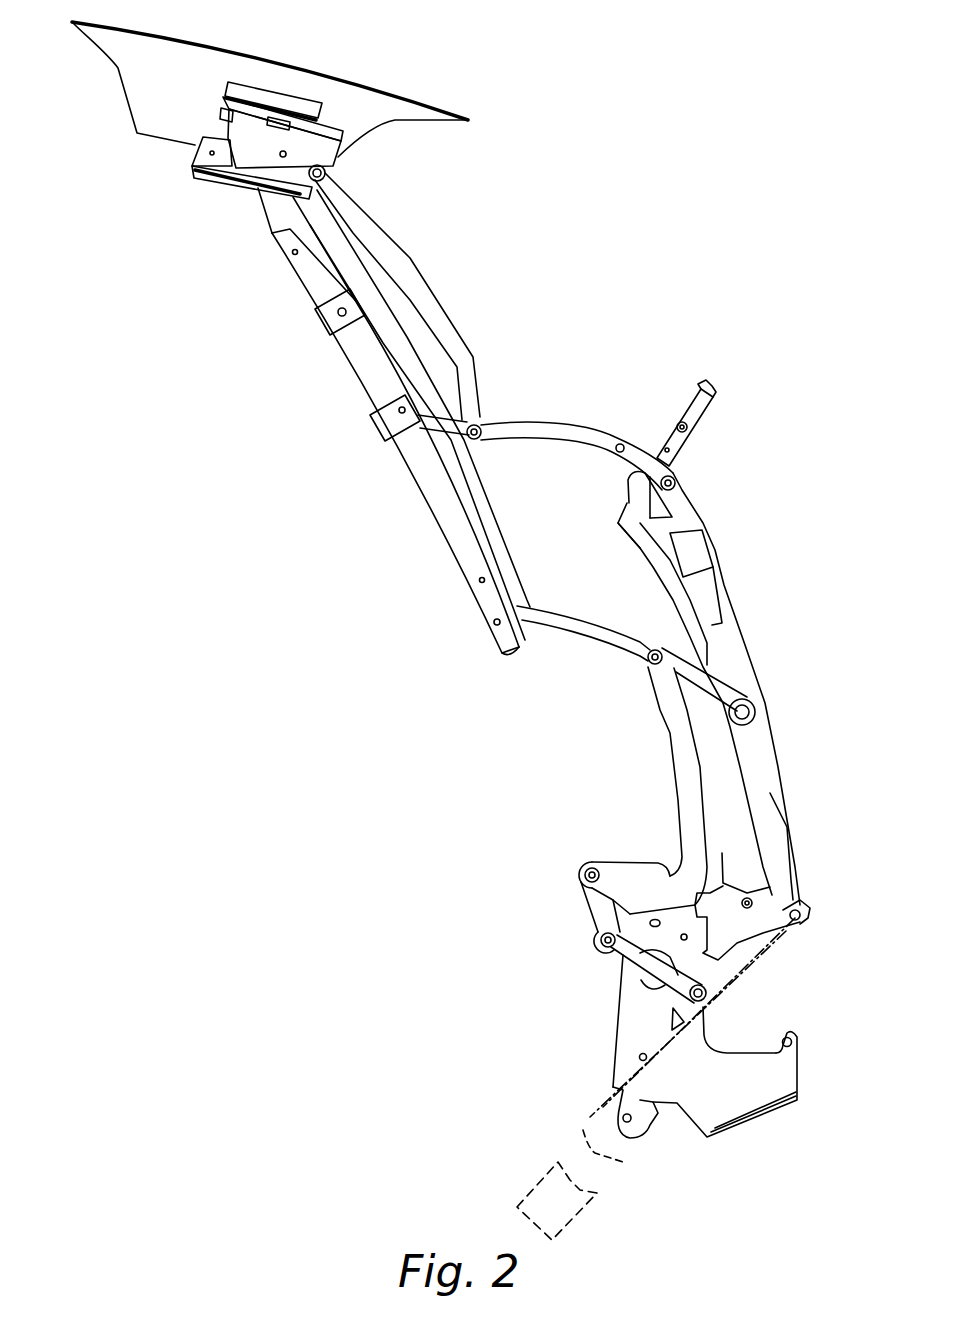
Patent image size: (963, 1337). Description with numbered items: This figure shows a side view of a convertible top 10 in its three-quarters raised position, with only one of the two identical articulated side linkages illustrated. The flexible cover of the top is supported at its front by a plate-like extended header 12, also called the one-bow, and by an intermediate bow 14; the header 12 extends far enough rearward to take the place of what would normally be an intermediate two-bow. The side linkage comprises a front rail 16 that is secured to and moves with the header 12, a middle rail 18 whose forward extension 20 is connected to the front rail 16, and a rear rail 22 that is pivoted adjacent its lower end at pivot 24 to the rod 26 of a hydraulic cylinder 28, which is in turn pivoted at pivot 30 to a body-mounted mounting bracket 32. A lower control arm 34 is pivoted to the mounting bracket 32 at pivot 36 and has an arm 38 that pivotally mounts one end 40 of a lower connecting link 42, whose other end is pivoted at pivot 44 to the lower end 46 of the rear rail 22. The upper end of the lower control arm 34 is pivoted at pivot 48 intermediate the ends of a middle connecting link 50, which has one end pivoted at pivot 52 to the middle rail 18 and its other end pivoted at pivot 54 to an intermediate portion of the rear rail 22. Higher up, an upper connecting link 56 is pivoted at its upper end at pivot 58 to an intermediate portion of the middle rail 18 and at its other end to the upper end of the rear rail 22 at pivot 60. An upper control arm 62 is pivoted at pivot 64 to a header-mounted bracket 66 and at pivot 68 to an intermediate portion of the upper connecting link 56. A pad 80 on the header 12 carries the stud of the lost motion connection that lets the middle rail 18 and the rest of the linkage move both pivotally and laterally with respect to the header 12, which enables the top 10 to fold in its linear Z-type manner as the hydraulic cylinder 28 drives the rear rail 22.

The convertible top 10 is at (668, 108).
The header 12 is at (366, 82).
The intermediate bow 14 is at (710, 397).
The front rail 16 is at (228, 182).
The middle rail 18 is at (427, 478).
The forward extension 20 is at (263, 209).
The rear rail 22 is at (678, 603).
The pivot 24 is at (805, 914).
The rod 26 is at (714, 1006).
The hydraulic cylinder 28 is at (536, 1182).
The pivot 30 is at (624, 1116).
The mounting bracket 32 is at (793, 1078).
The lower control arm 34 is at (678, 760).
The pivot 36 is at (583, 868).
The arm 38 is at (605, 920).
The end 40 is at (600, 946).
The lower connecting link 42 is at (625, 957).
The pivot 44 is at (713, 997).
The lower end 46 is at (735, 895).
The pivot 48 is at (650, 665).
The middle connecting link 50 is at (603, 640).
The pivot 52 is at (494, 636).
The pivot 54 is at (757, 708).
The upper connecting link 56 is at (557, 427).
The pivot 58 is at (388, 424).
The pivot 60 is at (677, 483).
The upper control arm 62 is at (424, 280).
The pivot 64 is at (328, 170).
The header-mounted bracket 66 is at (227, 133).
The pivot 68 is at (482, 424).
The pad 80 is at (294, 98).